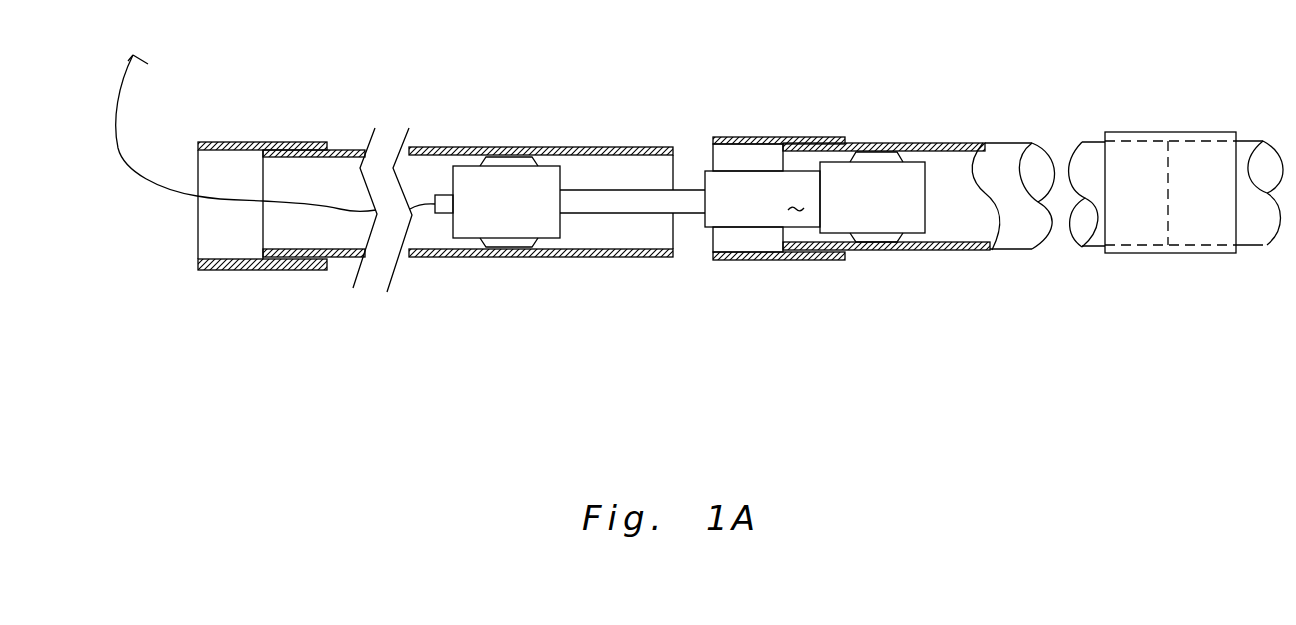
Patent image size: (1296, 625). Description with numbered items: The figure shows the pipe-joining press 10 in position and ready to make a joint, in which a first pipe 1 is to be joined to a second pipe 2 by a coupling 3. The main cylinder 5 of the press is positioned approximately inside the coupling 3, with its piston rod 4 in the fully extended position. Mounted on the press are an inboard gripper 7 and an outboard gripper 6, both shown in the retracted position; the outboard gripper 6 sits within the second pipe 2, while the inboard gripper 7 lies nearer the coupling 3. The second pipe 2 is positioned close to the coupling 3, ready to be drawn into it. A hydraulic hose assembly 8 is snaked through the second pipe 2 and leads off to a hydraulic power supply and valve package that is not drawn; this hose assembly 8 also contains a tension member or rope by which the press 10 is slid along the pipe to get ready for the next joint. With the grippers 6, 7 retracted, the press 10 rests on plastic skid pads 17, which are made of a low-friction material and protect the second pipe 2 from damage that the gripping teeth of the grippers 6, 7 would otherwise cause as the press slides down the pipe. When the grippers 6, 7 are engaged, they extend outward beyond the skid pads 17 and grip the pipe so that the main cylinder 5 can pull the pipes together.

The first pipe 1 is at (955, 147).
The second pipe 2 is at (608, 150).
The coupling 3 is at (760, 140).
The piston rod 4 is at (635, 200).
The main cylinder 5 is at (752, 202).
The outboard gripper 6 is at (487, 215).
The inboard gripper 7 is at (895, 212).
The hydraulic hose assembly 8 is at (287, 200).
The press 10 is at (793, 216).
The skid pads 17 is at (882, 158).